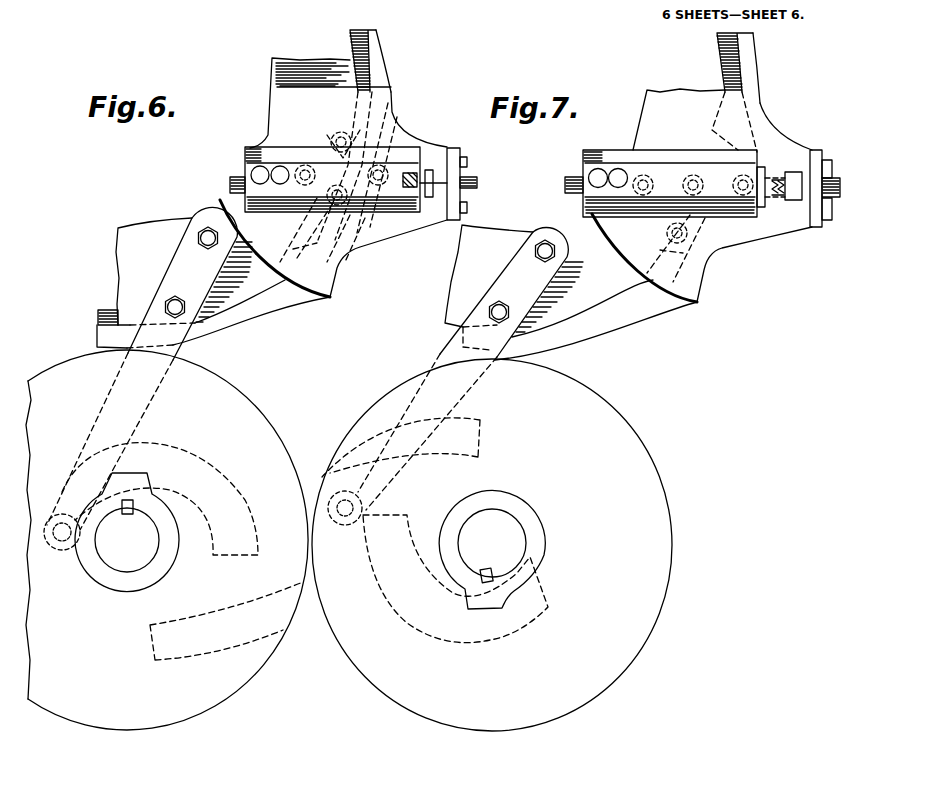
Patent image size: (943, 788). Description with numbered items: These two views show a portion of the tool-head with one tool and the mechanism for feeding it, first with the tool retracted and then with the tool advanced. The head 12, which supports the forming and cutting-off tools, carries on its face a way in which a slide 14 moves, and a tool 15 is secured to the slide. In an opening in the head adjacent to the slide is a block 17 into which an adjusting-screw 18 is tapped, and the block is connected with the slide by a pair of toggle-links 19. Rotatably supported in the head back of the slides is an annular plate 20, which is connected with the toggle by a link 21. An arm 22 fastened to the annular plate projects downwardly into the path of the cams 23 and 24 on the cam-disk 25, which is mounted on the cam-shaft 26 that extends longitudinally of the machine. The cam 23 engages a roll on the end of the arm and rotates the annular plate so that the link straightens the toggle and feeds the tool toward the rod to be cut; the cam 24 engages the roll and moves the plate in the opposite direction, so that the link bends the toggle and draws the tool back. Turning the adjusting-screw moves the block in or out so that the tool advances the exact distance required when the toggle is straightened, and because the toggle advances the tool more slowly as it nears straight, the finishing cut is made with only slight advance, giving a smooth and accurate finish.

In FIG. 6, the head 12 is at (380, 41).
In FIG. 7, the head 12 is at (748, 50).
In FIG. 6, the slide 14 is at (400, 148).
In FIG. 7, the slide 14 is at (673, 151).
In FIG. 6, the tool 15 is at (234, 177).
In FIG. 7, the tool 15 is at (580, 184).
In FIG. 6, the block 17 is at (434, 166).
In FIG. 7, the block 17 is at (790, 172).
In FIG. 6, the adjusting-screw 18 is at (470, 180).
In FIG. 7, the adjusting-screw 18 is at (835, 168).
In FIG. 6, the toggle-links 19 is at (344, 136).
In FIG. 7, the toggle-links 19 is at (673, 178).
In FIG. 6, the annular plate 20 is at (155, 271).
In FIG. 7, the annular plate 20 is at (489, 276).
In FIG. 6, the link 21 is at (320, 195).
In FIG. 7, the link 21 is at (667, 228).
In FIG. 6, the arm 22 is at (140, 378).
In FIG. 7, the arm 22 is at (448, 376).
In FIG. 6, the cam 23 is at (207, 462).
In FIG. 7, the cam 23 is at (437, 634).
In FIG. 6, the cam 24 is at (203, 659).
In FIG. 7, the cam 24 is at (482, 436).
In FIG. 6, the cam-disk 25 is at (167, 540).
In FIG. 7, the cam-disk 25 is at (492, 545).
In FIG. 6, the cam-shaft 26 is at (127, 532).
In FIG. 7, the cam-shaft 26 is at (492, 550).